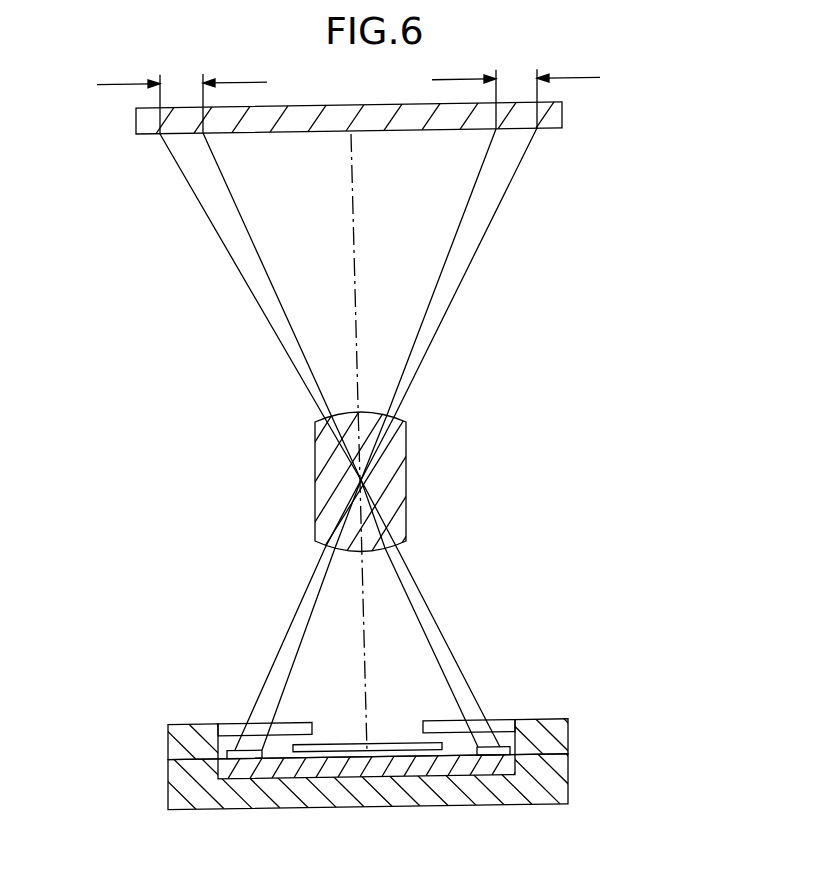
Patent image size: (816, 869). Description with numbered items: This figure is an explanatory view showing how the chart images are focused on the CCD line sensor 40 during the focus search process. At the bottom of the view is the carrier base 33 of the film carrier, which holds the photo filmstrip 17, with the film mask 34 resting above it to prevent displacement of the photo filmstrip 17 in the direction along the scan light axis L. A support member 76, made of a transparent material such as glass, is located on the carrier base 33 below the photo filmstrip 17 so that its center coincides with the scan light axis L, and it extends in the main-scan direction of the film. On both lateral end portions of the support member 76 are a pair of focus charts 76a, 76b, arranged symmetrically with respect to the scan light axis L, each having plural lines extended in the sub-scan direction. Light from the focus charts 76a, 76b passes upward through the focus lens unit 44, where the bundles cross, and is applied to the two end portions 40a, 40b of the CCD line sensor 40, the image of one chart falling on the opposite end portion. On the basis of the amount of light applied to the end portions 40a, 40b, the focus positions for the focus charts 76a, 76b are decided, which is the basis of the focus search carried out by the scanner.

The CCD line sensor 40 is at (553, 134).
The end portion of CCD line sensor 40a is at (585, 86).
The end portion of CCD line sensor 40b is at (108, 86).
The focus lens unit 44 is at (406, 492).
The scan light axis L is at (358, 363).
The support member 76 is at (342, 772).
The focus chart 76a is at (235, 753).
The focus chart 76b is at (498, 753).
The photo filmstrip 17 is at (392, 751).
The film mask 34 is at (565, 738).
The carrier base 33 is at (555, 790).